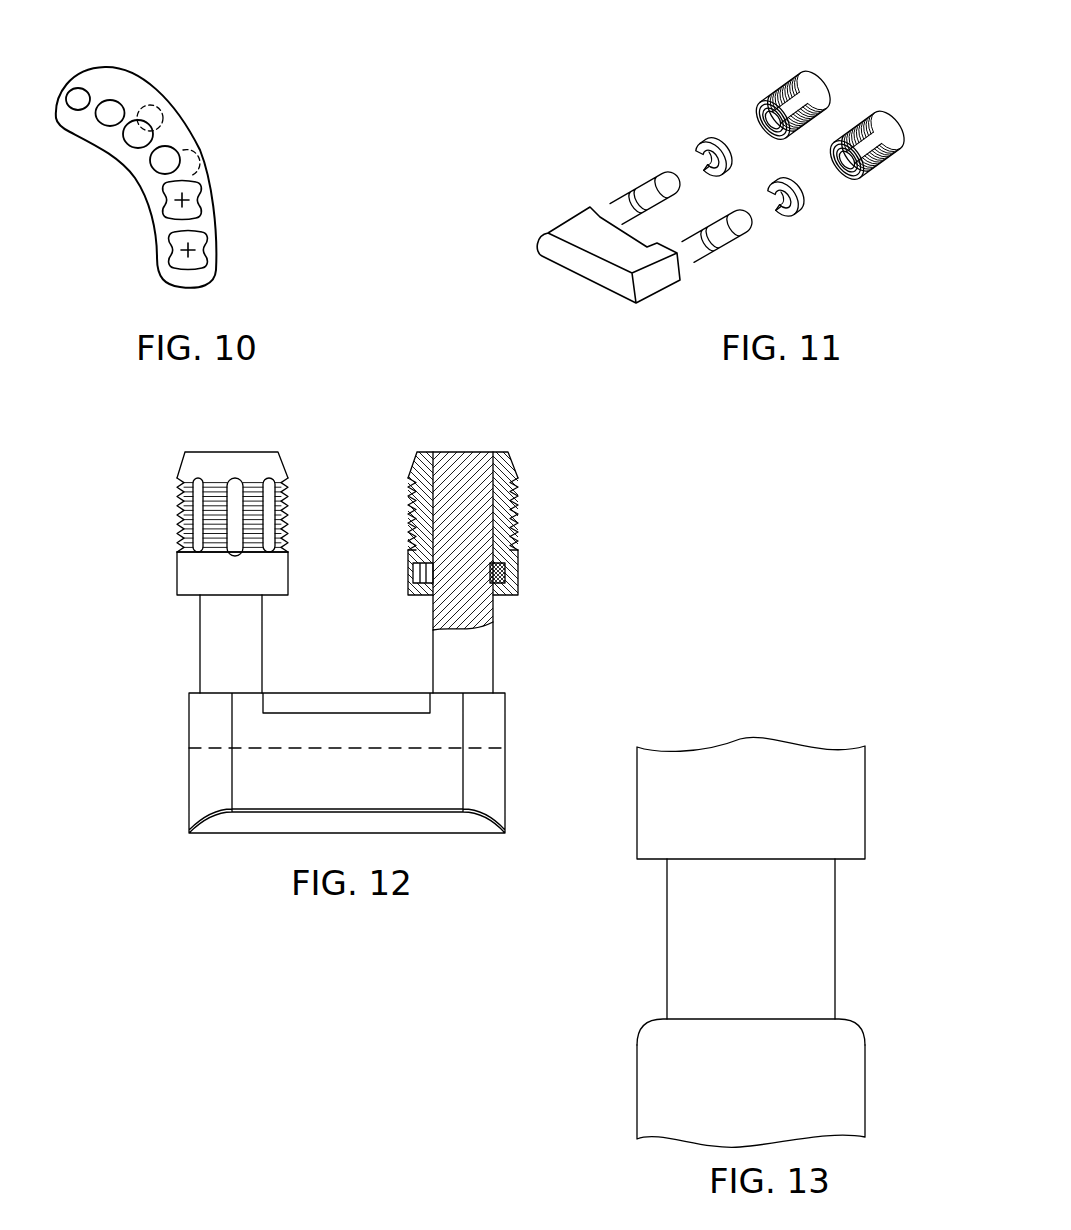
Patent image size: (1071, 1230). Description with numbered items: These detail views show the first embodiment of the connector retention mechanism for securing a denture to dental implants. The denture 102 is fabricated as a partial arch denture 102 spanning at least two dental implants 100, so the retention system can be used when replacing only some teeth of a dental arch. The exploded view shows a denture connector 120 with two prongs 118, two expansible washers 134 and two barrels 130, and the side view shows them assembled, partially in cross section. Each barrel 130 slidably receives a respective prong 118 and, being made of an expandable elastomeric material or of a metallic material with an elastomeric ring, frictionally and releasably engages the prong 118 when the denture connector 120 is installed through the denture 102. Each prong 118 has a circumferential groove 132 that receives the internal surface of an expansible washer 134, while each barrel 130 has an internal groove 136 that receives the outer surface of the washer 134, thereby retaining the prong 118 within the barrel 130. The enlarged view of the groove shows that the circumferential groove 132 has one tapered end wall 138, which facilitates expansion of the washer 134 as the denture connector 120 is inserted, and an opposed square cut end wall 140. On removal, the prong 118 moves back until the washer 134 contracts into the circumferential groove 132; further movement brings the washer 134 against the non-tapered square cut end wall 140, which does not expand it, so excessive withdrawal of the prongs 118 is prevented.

In FIG. 10, the dental implant 100 is at (157, 112).
In FIG. 10, the denture 102 is at (236, 212).
In FIG. 12, the prong 118 is at (200, 637).
In FIG. 13, the prong 118 is at (609, 1099).
In FIG. 11, the denture connector 120 is at (551, 170).
In FIG. 12, the denture connector 120 is at (143, 750).
In FIG. 11, the barrel 130 is at (820, 82).
In FIG. 12, the barrel 130 is at (177, 510).
In FIG. 11, the circumferential groove 132 is at (633, 187).
In FIG. 12, the circumferential groove 132 is at (411, 613).
In FIG. 13, the circumferential groove 132 is at (636, 933).
In FIG. 11, the expansible washer 134 is at (710, 142).
In FIG. 12, the expansible washer 134 is at (505, 573).
In FIG. 12, the internal groove 136 is at (388, 570).
In FIG. 13, the tapered end wall 138 is at (850, 1035).
In FIG. 13, the square cut end wall 140 is at (850, 861).